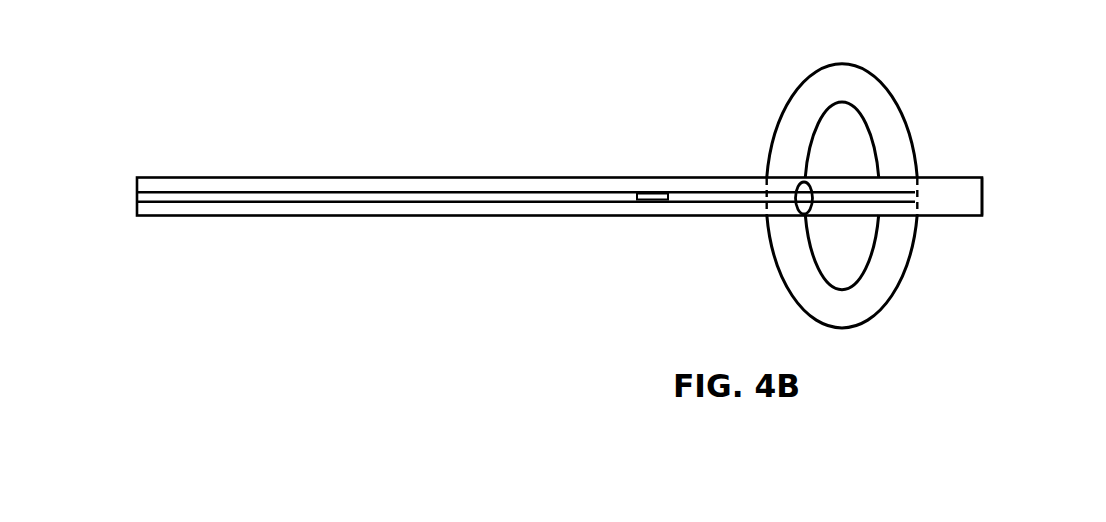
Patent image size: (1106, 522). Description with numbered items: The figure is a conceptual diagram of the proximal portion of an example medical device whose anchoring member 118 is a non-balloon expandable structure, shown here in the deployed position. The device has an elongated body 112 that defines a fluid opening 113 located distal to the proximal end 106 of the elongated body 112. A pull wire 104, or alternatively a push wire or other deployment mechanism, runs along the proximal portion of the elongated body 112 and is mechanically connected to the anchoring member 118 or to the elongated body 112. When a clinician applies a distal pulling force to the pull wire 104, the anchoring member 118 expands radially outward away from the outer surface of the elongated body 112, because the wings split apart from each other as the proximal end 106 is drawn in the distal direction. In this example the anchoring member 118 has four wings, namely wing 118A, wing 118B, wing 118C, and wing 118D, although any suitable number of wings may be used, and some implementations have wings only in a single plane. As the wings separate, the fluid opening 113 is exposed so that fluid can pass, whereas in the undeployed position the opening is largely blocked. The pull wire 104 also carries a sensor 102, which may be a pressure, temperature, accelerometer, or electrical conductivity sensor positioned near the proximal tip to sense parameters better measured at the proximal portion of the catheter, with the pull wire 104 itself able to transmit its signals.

The sensor 102 is at (652, 189).
The pull wire 104 is at (512, 190).
The proximal end 106 is at (983, 178).
The elongated body 112 is at (350, 177).
The fluid opening 113 is at (799, 204).
The anchoring member 118 is at (915, 200).
The wing 118A is at (857, 64).
The wing 118B is at (848, 328).
The wing 118C is at (850, 217).
The wing 118D is at (841, 176).